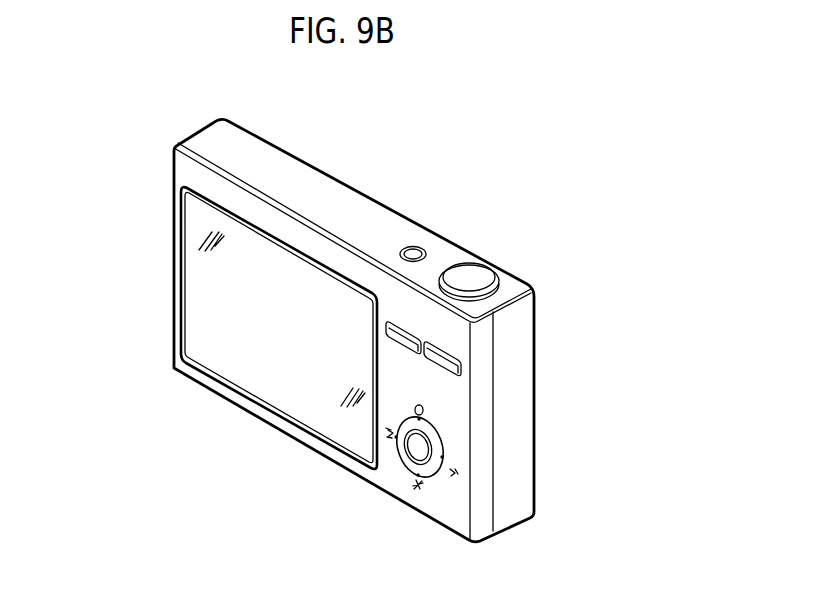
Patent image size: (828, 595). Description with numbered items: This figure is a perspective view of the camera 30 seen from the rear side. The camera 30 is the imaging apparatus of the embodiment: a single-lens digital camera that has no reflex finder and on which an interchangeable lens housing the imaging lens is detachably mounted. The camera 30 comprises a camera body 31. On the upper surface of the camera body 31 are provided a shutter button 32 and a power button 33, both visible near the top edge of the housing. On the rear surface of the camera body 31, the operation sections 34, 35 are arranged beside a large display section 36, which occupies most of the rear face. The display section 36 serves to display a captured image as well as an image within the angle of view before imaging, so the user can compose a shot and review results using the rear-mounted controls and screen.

The camera 30 is at (123, 248).
The camera body 31 is at (525, 432).
The shutter button 32 is at (477, 272).
The power button 33 is at (415, 252).
The operation section 34 is at (456, 374).
The operation section 35 is at (432, 473).
The display section 36 is at (262, 390).